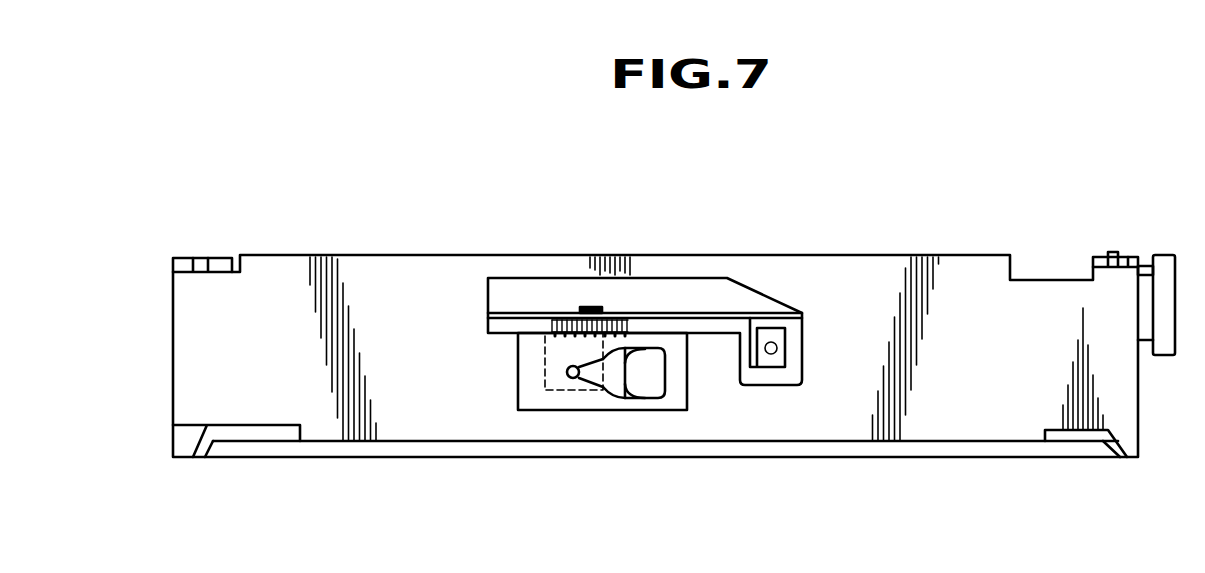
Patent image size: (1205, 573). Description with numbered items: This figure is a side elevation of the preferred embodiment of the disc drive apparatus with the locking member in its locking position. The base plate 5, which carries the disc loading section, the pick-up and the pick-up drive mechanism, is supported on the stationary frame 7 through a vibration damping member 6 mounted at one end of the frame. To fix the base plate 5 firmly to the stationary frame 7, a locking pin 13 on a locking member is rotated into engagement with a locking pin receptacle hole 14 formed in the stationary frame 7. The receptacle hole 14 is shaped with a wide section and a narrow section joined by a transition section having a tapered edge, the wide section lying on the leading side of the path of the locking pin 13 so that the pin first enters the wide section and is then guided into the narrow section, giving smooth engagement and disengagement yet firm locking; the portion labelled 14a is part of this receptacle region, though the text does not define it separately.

The stationary frame 7 is at (378, 268).
The base plate 5 is at (517, 313).
The vibration damping member 6 is at (1147, 272).
The locking pin 13 is at (571, 380).
The locking pin receptacle hole 14 is at (587, 390).
The engaging portion 14a is at (640, 357).